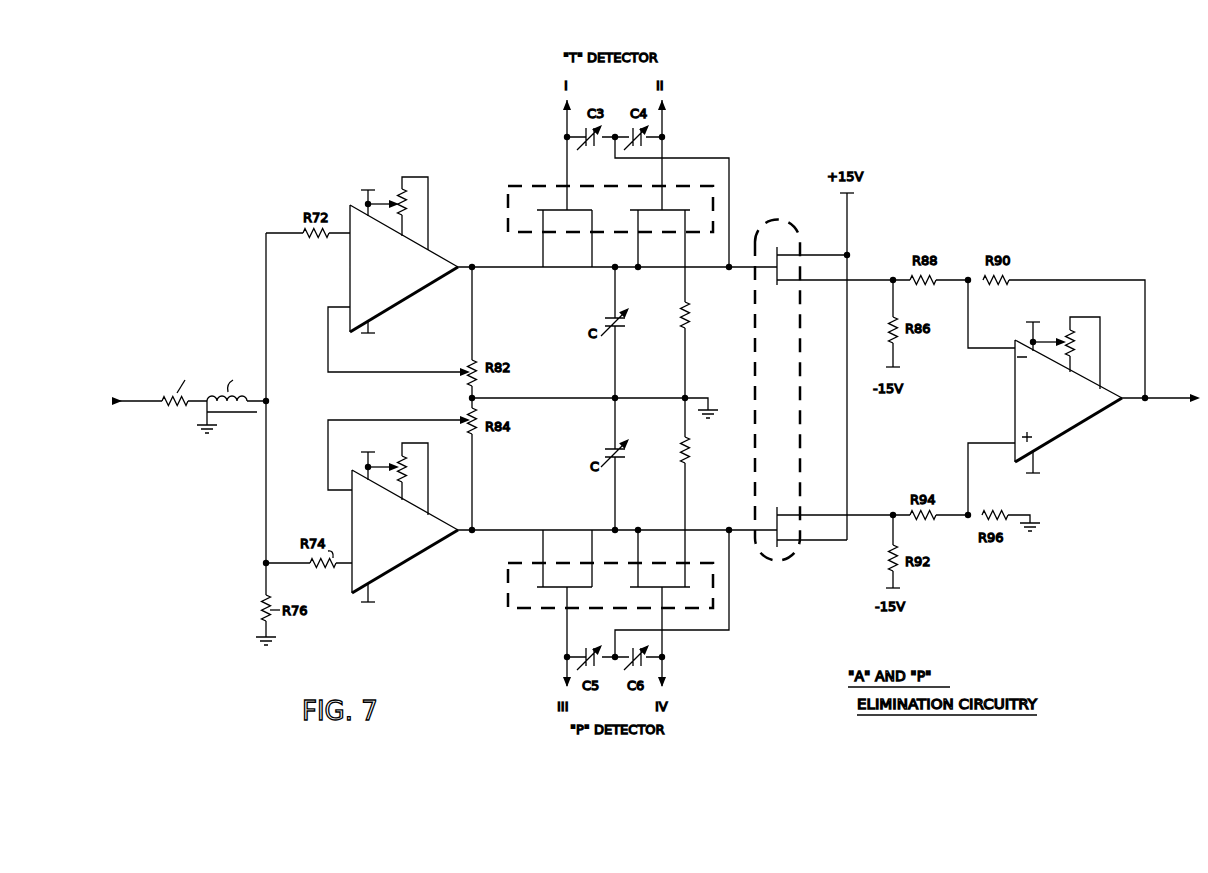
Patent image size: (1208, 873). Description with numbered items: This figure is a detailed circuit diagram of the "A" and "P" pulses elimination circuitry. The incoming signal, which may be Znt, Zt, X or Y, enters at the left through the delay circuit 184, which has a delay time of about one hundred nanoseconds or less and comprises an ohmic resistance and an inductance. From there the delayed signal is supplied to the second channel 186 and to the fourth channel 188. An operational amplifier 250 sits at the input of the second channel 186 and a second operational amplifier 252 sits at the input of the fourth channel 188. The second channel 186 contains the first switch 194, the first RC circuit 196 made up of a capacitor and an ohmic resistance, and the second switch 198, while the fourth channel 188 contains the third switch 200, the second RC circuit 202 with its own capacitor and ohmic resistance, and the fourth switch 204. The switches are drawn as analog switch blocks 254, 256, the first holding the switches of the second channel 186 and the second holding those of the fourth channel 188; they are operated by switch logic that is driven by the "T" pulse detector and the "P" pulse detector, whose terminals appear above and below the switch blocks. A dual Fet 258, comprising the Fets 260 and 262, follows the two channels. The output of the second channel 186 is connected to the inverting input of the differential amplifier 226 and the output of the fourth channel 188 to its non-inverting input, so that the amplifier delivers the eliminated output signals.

The delay circuit 184 is at (171, 420).
The second channel 186 is at (266, 282).
The fourth channel 188 is at (266, 515).
The first switch 194 is at (556, 205).
The first RC circuit 196 is at (657, 356).
The second switch 198 is at (682, 207).
The third switch 200 is at (540, 588).
The second RC circuit 202 is at (663, 437).
The fourth switch 204 is at (680, 592).
The differential amplifier 226 is at (1075, 421).
The operational amplifier 250 is at (350, 280).
The operational amplifier 252 is at (398, 550).
The analog switch block 254 is at (509, 184).
The analog switch block 256 is at (542, 610).
The dual Fet 258 is at (773, 218).
The Fet 260 is at (780, 258).
The Fet 262 is at (795, 546).